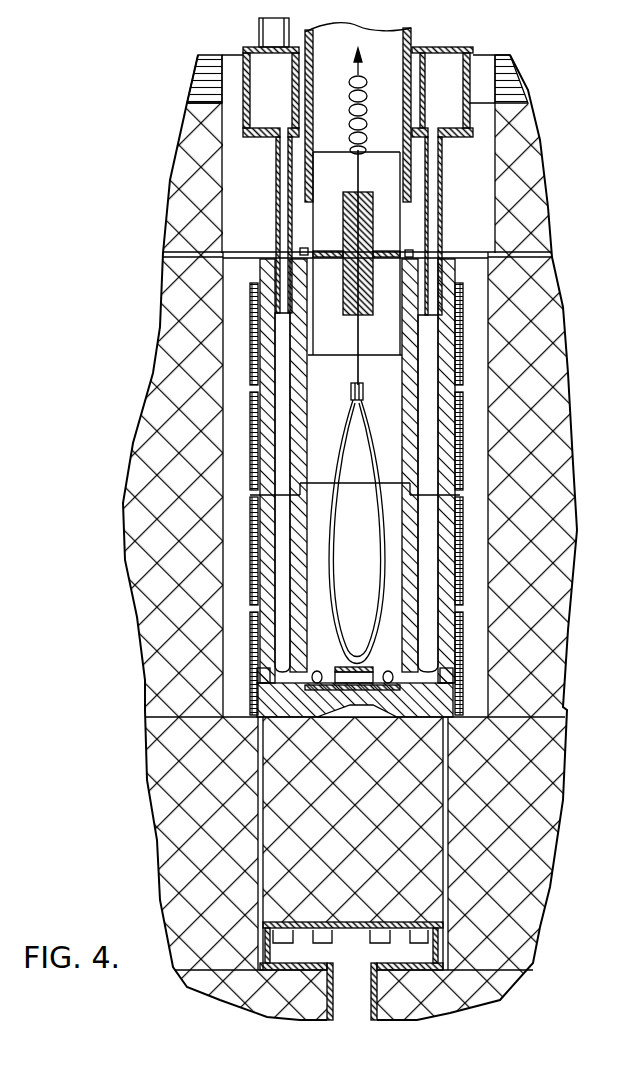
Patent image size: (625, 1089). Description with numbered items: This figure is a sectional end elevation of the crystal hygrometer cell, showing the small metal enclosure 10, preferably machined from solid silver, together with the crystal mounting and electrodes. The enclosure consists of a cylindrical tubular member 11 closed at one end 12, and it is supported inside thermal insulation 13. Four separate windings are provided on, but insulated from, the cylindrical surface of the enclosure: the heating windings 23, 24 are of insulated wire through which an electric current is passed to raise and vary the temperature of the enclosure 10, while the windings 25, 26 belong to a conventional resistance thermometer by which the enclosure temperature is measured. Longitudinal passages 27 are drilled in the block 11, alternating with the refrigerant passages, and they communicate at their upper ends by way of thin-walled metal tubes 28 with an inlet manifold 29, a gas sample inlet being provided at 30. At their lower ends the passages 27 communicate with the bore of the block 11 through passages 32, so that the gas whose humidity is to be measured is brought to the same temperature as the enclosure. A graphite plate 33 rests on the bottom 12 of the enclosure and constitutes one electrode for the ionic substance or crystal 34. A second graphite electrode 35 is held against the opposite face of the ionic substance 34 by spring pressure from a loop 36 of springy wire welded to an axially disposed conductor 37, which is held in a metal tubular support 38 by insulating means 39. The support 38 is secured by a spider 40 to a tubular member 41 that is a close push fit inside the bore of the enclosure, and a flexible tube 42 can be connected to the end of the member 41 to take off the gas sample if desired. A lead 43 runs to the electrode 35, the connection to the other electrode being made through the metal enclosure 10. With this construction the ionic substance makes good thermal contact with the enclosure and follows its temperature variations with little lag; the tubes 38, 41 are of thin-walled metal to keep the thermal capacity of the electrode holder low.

The metal enclosure 10 is at (393, 397).
The cylindrical tubular member 11 is at (458, 264).
The closed end 12 is at (254, 720).
The thermal insulation 13 is at (350, 537).
The heating winding 23 is at (250, 648).
The heating winding 24 is at (250, 459).
The resistance thermometer winding 25 is at (250, 560).
The resistance thermometer winding 26 is at (252, 303).
The longitudinal passage 27 is at (283, 342).
The thin-walled metal tube 28 is at (276, 192).
The inlet manifold 29 is at (444, 60).
The gas sample inlet 30 is at (260, 33).
The passage 32 is at (400, 670).
The graphite plate 33 is at (307, 695).
The ionic substance 34 is at (318, 671).
The graphite electrode 35 is at (388, 670).
The loop of springy wire 36 is at (332, 529).
The axially disposed conductor 37 is at (355, 337).
The metal tubular support 38 is at (344, 203).
The insulating means 39 is at (360, 192).
The spider 40 is at (406, 251).
The tubular member 41 is at (306, 249).
The flexible tube 42 is at (311, 116).
The lead 43 is at (366, 112).